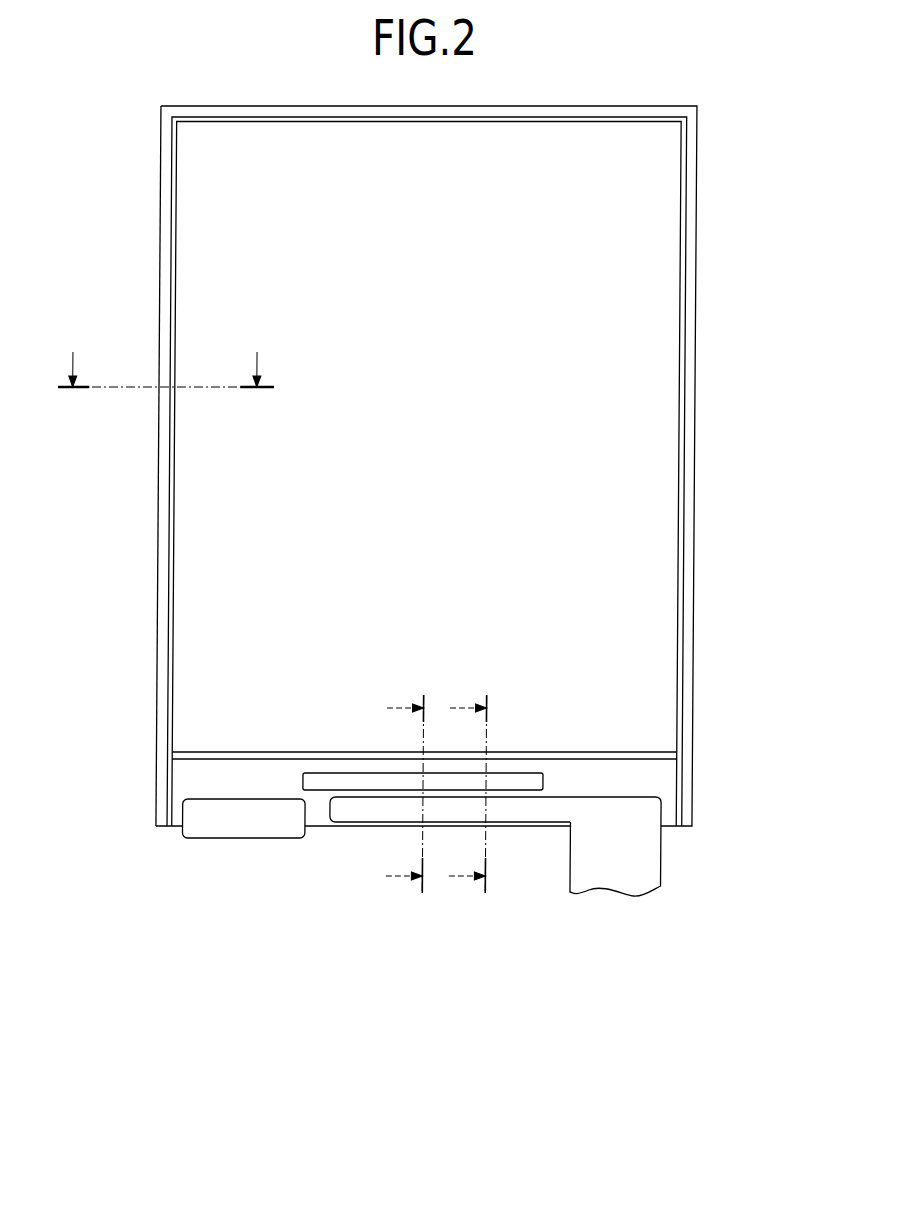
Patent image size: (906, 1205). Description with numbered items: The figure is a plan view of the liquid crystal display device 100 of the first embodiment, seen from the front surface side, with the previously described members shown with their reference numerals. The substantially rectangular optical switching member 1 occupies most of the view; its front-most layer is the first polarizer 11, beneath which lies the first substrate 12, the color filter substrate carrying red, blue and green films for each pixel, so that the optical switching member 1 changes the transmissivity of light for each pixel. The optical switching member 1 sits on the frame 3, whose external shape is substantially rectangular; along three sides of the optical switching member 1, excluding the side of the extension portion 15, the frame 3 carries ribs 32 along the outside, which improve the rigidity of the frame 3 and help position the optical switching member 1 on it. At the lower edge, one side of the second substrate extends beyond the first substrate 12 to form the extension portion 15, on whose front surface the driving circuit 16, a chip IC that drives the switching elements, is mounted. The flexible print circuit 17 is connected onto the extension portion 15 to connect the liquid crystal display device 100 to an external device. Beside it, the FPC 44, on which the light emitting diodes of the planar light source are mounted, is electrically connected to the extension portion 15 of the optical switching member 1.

The liquid crystal display device 100 is at (152, 945).
The optical switching member 1 is at (688, 391).
The frame 3 is at (162, 240).
The rib 32 is at (162, 494).
The first polarizer 11 is at (631, 474).
The first substrate 12 is at (672, 750).
The extension portion 15 is at (660, 780).
The driving circuit 16 is at (325, 778).
The flexible print circuit 17 is at (646, 862).
The FPC 44 is at (246, 822).